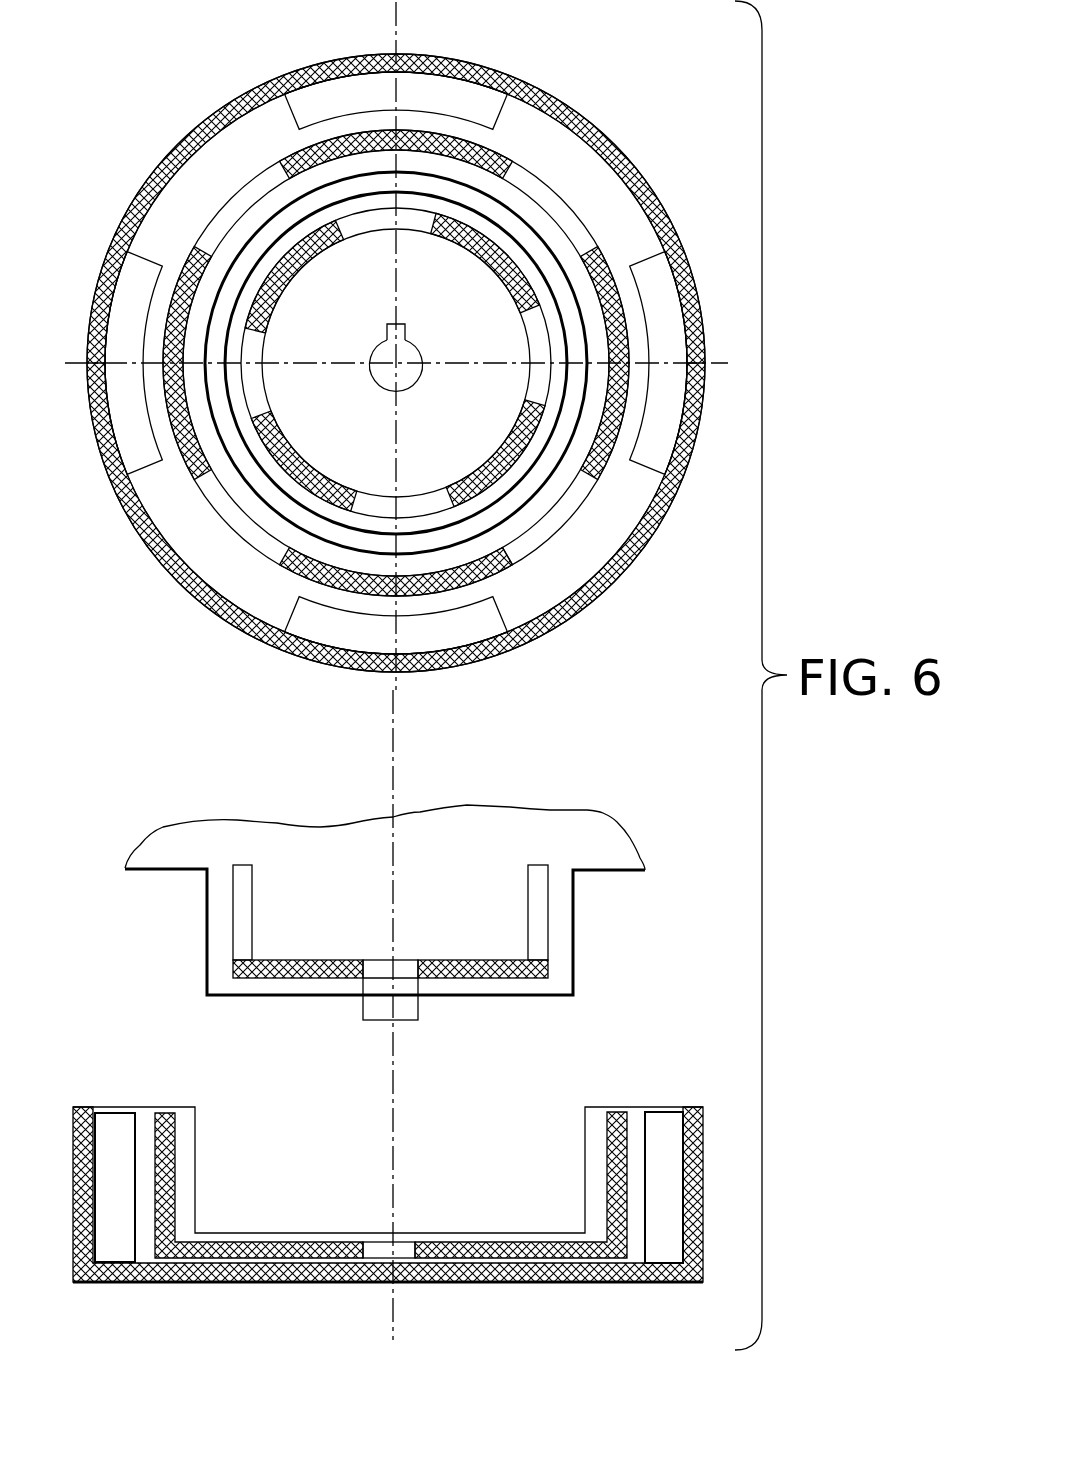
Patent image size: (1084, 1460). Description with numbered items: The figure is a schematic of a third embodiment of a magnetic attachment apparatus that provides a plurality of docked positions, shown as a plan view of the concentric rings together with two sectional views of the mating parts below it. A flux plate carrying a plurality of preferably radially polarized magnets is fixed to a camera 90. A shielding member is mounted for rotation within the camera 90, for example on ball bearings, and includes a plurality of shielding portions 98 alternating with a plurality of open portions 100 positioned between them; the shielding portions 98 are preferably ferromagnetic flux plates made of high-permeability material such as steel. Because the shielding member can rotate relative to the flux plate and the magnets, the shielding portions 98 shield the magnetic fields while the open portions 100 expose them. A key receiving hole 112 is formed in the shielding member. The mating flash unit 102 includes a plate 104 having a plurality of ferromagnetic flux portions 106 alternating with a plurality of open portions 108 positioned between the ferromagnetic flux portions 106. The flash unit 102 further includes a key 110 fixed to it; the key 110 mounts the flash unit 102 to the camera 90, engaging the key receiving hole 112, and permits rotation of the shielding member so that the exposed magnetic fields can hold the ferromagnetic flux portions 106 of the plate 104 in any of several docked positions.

The camera 90 is at (703, 1106).
The shielding portions 98 is at (598, 475).
The open portions 100 is at (517, 553).
The flash unit 102 is at (617, 871).
The plate 104 is at (530, 362).
The ferromagnetic flux portions 106 is at (288, 443).
The open portions 108 is at (403, 500).
The key 110 is at (378, 348).
The key receiving hole 112 is at (377, 1258).